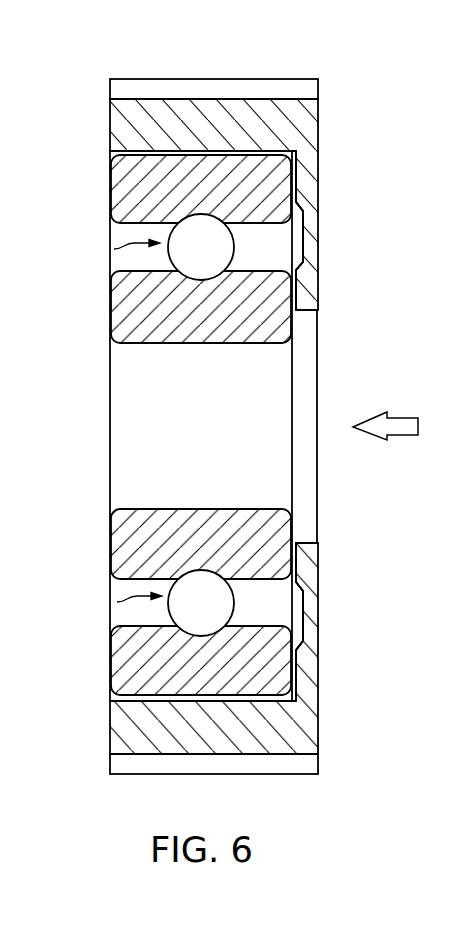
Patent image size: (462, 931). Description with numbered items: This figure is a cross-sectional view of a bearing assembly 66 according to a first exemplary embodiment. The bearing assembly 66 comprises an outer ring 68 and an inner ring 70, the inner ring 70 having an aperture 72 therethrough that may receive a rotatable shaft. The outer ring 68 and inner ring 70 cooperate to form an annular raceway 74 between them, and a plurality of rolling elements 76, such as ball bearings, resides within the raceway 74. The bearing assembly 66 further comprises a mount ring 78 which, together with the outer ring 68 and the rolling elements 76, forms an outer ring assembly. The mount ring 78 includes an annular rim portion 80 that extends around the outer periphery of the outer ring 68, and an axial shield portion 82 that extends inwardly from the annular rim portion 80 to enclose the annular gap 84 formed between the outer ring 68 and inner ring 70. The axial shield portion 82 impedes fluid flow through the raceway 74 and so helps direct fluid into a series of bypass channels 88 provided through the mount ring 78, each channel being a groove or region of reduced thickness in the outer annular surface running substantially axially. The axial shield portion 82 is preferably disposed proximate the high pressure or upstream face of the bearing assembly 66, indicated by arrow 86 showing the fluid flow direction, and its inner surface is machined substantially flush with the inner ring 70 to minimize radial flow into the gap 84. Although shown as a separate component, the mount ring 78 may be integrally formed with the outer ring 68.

The bearing assembly 66 is at (373, 166).
The outer ring 68 is at (127, 190).
The inner ring 70 is at (127, 307).
The aperture 72 is at (214, 442).
The annular raceway 74 is at (135, 253).
The rolling elements 76 is at (214, 262).
The mount ring 78 is at (115, 79).
The annular rim portion 80 is at (125, 120).
The axial shield portion 82 is at (312, 293).
The annular gap 84 is at (280, 252).
The arrow 86 is at (402, 422).
The bypass channels 88 is at (290, 92).